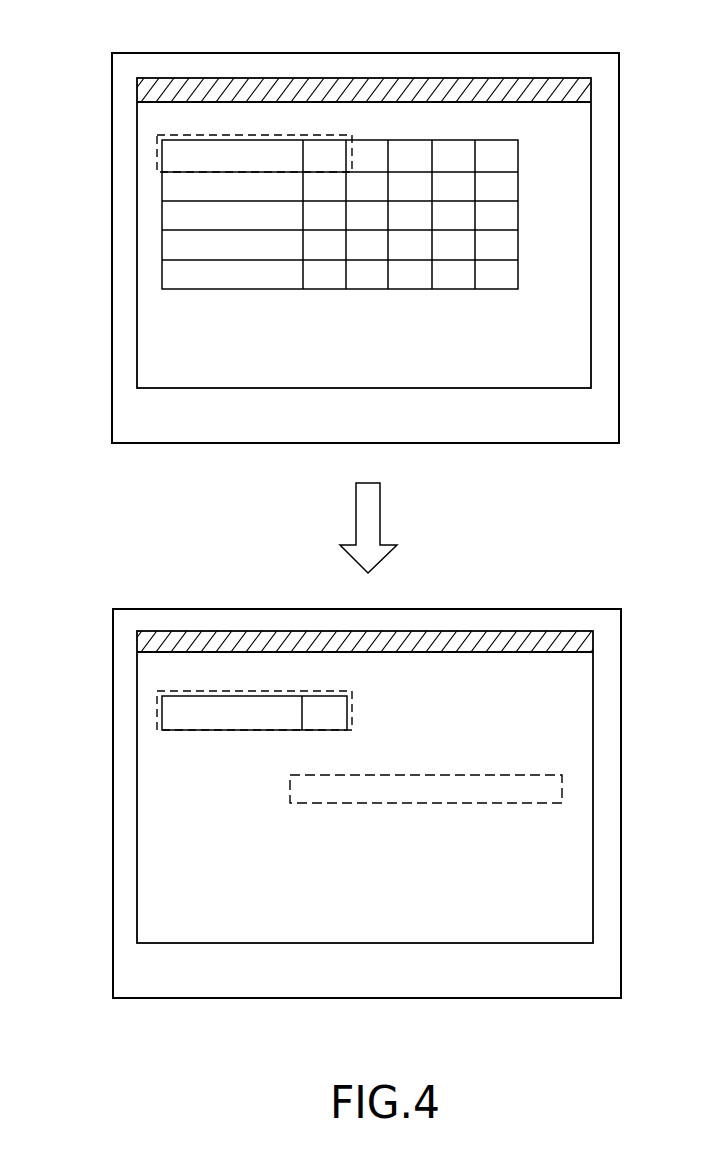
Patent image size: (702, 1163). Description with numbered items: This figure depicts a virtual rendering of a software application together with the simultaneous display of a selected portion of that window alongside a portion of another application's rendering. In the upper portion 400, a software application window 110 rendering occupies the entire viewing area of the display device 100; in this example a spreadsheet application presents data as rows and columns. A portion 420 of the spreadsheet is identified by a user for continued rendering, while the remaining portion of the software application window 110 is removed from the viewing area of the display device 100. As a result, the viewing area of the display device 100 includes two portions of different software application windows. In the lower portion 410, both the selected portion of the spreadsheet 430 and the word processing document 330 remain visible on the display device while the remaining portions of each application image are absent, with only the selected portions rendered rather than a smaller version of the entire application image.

The display device 100 is at (541, 53).
The software application window 110 is at (379, 347).
The word processing document 330 is at (463, 775).
The upper portion 400 is at (277, 198).
The lower portion 410 is at (300, 734).
The portion of the spreadsheet 420 is at (349, 138).
The selected portion of the spreadsheet 430 is at (351, 694).